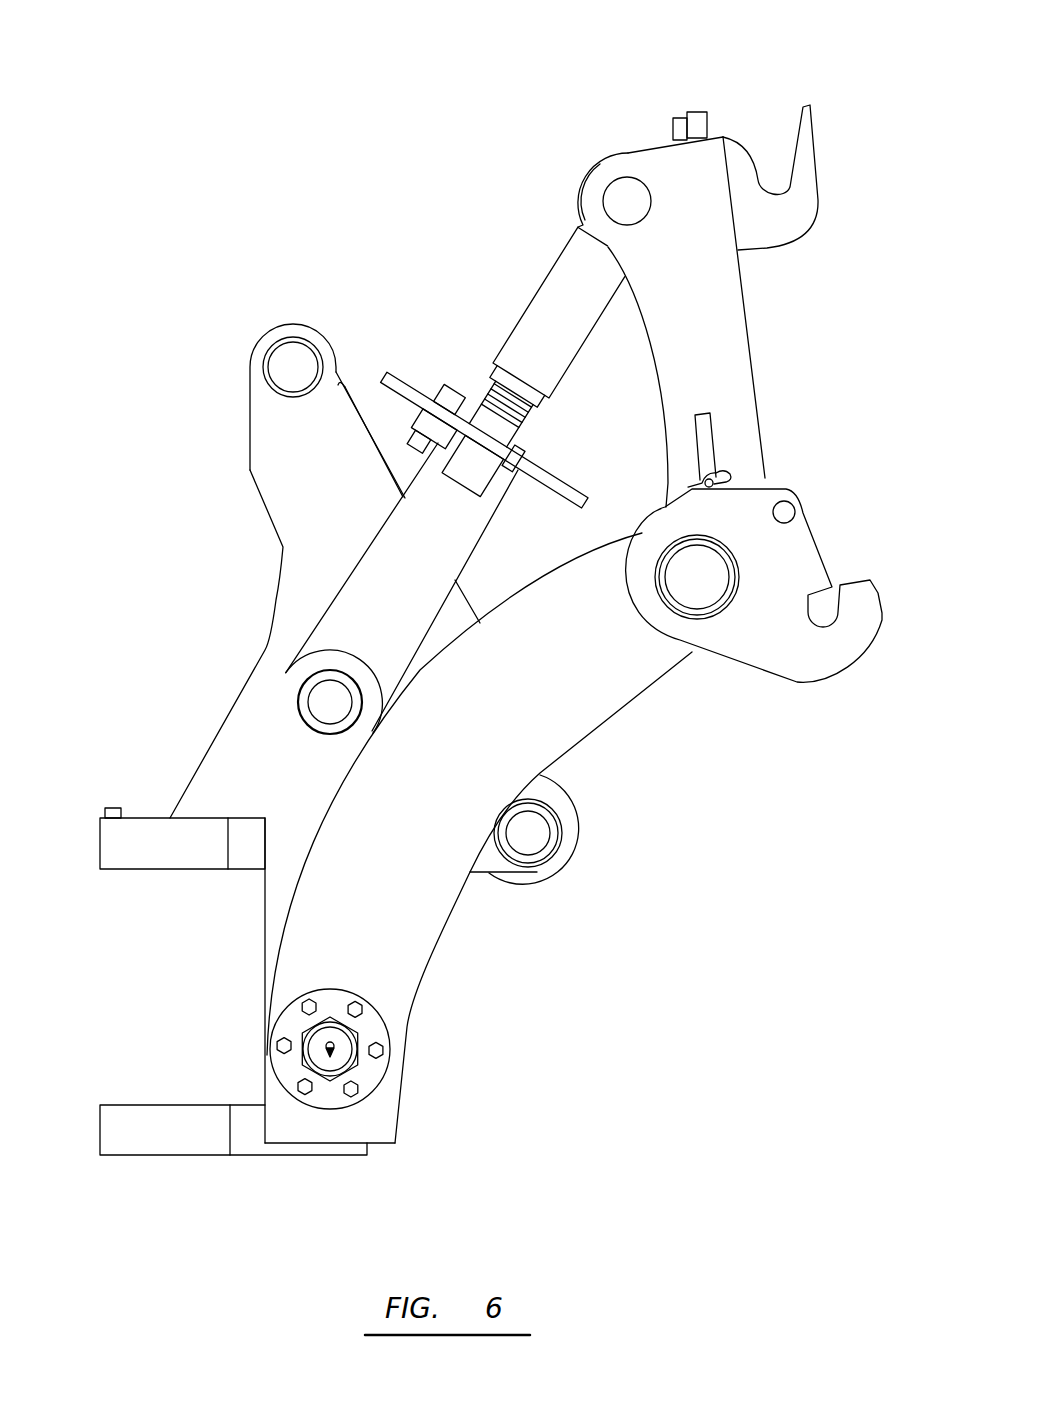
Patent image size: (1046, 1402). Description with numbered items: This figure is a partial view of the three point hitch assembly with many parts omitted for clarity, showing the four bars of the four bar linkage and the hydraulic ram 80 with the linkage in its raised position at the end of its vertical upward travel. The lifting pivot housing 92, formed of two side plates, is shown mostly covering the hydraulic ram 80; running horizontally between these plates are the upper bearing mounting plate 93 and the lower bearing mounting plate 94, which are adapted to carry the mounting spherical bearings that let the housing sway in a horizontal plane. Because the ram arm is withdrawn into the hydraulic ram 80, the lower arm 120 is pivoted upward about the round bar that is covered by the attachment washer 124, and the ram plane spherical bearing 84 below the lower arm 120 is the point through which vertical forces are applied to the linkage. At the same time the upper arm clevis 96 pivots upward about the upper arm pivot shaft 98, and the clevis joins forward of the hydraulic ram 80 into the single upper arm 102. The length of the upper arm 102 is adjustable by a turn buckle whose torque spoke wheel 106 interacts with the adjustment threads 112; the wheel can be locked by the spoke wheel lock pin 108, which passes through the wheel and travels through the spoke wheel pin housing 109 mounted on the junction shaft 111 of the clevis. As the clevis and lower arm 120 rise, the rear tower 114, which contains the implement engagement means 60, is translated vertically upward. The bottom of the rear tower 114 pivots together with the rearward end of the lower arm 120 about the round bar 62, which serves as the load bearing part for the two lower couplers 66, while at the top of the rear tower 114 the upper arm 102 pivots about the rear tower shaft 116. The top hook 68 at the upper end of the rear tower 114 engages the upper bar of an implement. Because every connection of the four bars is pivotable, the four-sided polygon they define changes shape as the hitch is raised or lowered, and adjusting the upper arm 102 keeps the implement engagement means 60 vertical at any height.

The implement engagement means 60 is at (704, 92).
The round bar 62 is at (697, 598).
The lower couplers 66 is at (848, 660).
The top hook 68 is at (815, 170).
The hydraulic ram 80 is at (347, 383).
The ram plane spherical bearing 84 is at (540, 835).
The lifting pivot housing 92 is at (330, 470).
The upper bearing mounting plate 93 is at (117, 838).
The lower bearing mounting plate 94 is at (117, 1129).
The upper arm clevis 96 is at (416, 603).
The upper arm pivot shaft 98 is at (323, 703).
The upper arm 102 is at (560, 258).
The torque spoke wheel 106 is at (403, 383).
The spoke wheel lock pin 108 is at (453, 400).
The spoke wheel pin housing 109 is at (410, 447).
The junction shaft 111 is at (498, 480).
The adjustment threads 112 is at (530, 425).
The rear tower 114 is at (717, 326).
The rear tower shaft 116 is at (622, 195).
The lower arm 120 is at (520, 710).
The attachment washer 124 is at (372, 1072).